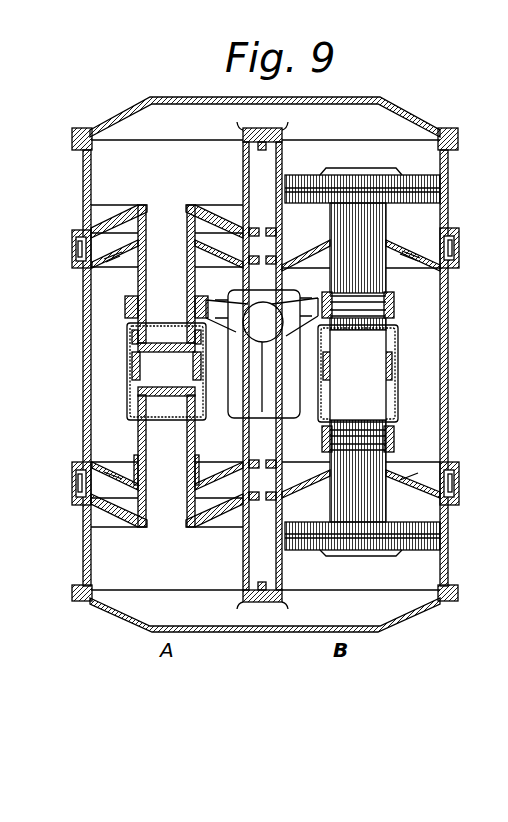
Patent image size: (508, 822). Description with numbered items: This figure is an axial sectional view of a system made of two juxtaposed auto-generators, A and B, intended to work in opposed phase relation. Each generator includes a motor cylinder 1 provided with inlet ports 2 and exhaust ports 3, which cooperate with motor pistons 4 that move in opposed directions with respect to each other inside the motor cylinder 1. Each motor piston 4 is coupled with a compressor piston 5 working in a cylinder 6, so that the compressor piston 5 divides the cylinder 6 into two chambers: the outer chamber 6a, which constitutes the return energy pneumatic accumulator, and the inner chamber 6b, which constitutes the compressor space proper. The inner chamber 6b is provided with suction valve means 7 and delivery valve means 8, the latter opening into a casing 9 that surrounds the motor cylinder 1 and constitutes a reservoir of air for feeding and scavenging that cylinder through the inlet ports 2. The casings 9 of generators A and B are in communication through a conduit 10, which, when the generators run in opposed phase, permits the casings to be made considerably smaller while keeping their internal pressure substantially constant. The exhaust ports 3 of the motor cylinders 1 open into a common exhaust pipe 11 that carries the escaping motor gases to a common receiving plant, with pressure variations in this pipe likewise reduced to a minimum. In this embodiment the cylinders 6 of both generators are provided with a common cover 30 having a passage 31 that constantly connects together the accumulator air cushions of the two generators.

The common cover 30 is at (206, 98).
The passage 31 is at (270, 128).
The cylinder 6 is at (86, 194).
The outer chamber 6a is at (110, 172).
The inner chamber 6b is at (428, 222).
The compressor piston 5 is at (100, 230).
The suction valve means 7 is at (77, 248).
The delivery valve means 8 is at (117, 256).
The casing 9 is at (85, 322).
The exhaust ports 3 is at (138, 305).
The motor pistons 4 is at (135, 345).
The motor cylinder 1 is at (132, 372).
The inlet ports 2 is at (138, 437).
The conduit 10 is at (282, 392).
The common exhaust pipe 11 is at (262, 336).